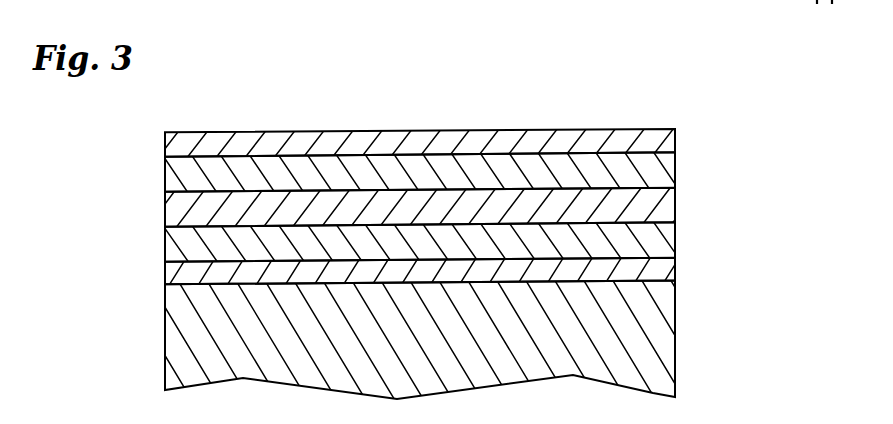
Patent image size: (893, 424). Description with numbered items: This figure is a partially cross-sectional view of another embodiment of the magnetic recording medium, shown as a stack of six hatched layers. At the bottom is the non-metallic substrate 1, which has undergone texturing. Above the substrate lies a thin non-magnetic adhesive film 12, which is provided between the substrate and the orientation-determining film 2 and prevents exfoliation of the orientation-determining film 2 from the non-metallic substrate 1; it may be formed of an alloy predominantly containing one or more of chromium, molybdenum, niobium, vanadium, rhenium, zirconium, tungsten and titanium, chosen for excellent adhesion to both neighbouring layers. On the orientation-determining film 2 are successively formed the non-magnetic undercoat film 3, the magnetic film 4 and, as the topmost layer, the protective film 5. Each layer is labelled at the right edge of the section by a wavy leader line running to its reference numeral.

The non-metallic substrate 1 is at (675, 313).
The non-magnetic adhesive film 12 is at (675, 262).
The orientation-determining film 2 is at (675, 229).
The non-magnetic undercoat film 3 is at (675, 197).
The magnetic film 4 is at (675, 165).
The protective film 5 is at (675, 135).